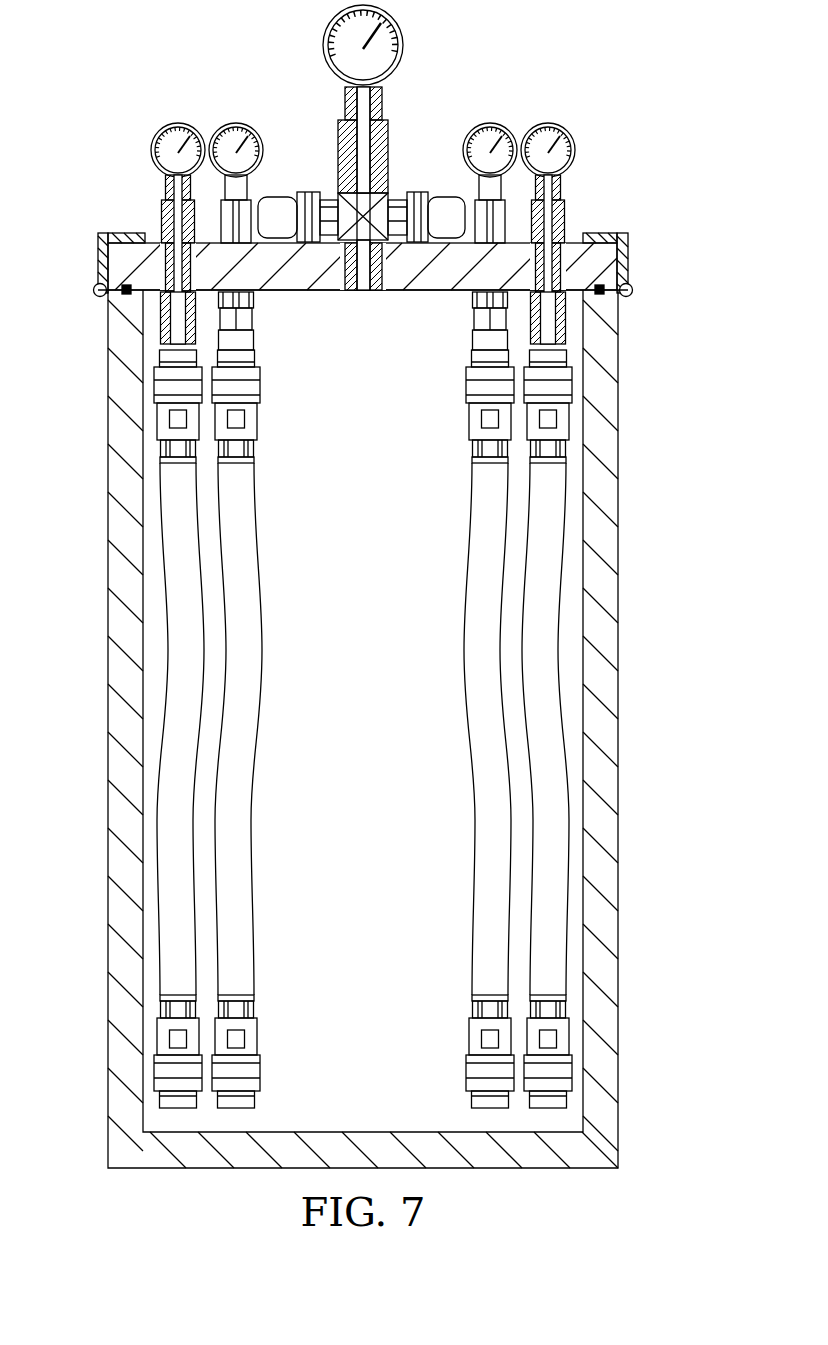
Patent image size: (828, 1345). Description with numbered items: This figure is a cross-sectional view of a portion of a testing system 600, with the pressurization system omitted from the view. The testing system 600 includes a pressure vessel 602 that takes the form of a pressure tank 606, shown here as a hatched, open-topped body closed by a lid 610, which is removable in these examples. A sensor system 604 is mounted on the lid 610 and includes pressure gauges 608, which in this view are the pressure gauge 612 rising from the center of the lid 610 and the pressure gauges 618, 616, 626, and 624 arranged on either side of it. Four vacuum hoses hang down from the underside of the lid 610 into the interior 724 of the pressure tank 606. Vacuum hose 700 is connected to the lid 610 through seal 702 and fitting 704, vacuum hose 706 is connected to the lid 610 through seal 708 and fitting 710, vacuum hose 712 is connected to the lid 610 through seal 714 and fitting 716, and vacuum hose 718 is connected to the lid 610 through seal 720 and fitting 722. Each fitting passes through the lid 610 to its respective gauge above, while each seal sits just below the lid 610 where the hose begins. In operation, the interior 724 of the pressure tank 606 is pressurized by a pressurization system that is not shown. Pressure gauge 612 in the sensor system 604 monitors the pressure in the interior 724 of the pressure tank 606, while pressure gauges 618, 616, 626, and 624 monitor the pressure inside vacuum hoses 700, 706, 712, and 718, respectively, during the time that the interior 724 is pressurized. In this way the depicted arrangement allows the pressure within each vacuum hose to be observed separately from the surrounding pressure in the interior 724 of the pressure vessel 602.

The testing system 600 is at (660, 494).
The pressure vessel 602 is at (620, 988).
The sensor system 604 is at (578, 86).
The pressure tank 606 is at (620, 1088).
The pressure gauges 608 is at (594, 136).
The lid 610 is at (573, 238).
The pressure gauge 612 is at (325, 40).
The pressure gauge 616 is at (238, 124).
The pressure gauge 618 is at (168, 128).
The pressure gauge 624 is at (545, 124).
The pressure gauge 626 is at (482, 125).
The vacuum hose 700 is at (167, 906).
The seal 702 is at (152, 422).
The fitting 704 is at (152, 320).
The vacuum hose 706 is at (258, 888).
The seal 708 is at (273, 402).
The fitting 710 is at (266, 322).
The vacuum hose 712 is at (468, 893).
The seal 714 is at (460, 400).
The fitting 716 is at (464, 322).
The vacuum hose 718 is at (562, 912).
The seal 720 is at (576, 420).
The fitting 722 is at (573, 327).
The interior 724 is at (384, 997).